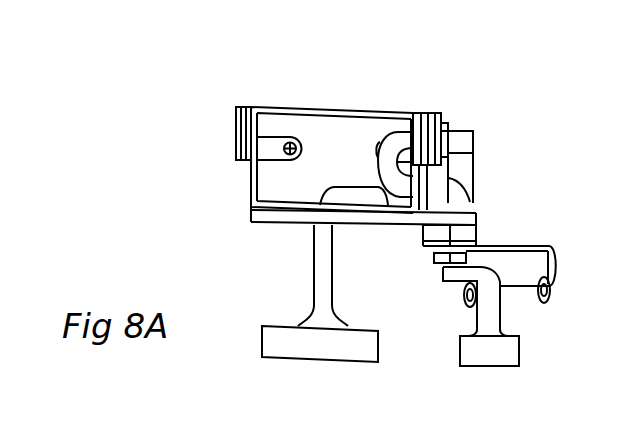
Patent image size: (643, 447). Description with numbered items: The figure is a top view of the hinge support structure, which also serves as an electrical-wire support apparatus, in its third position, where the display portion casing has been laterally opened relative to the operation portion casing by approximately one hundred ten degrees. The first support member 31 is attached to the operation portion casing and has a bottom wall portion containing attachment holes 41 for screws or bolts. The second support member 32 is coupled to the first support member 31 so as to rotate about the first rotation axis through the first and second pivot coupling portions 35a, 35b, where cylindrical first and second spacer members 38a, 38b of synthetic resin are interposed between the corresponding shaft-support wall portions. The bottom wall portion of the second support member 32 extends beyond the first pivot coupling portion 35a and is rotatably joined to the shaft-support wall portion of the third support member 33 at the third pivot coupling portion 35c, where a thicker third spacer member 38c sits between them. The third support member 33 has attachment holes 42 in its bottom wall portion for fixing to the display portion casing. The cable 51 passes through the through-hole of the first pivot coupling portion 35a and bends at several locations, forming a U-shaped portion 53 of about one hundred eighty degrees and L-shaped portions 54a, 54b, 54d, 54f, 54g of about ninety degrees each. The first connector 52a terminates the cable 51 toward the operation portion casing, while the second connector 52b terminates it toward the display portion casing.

The first support member 31 is at (365, 108).
The second support member 32 is at (250, 216).
The third support member 33 is at (557, 263).
The first pivot coupling portion 35a is at (448, 114).
The second pivot coupling portion 35b is at (237, 132).
The third pivot coupling portion 35c is at (478, 210).
The first spacer member 38a is at (432, 112).
The second spacer member 38b is at (243, 106).
The third spacer member 38c is at (476, 235).
The attachment holes 41 is at (293, 137).
The attachment holes 42 is at (466, 302).
The cable 51 is at (312, 280).
The first connector 52a is at (320, 352).
The second connector 52b is at (490, 360).
The U-shaped portion 53 is at (383, 167).
The L-shaped portion 54a is at (342, 202).
The L-shaped portion 54b is at (473, 175).
The L-shaped portion 54d is at (473, 132).
The L-shaped portion 54f is at (440, 258).
The L-shaped portion 54g is at (497, 294).